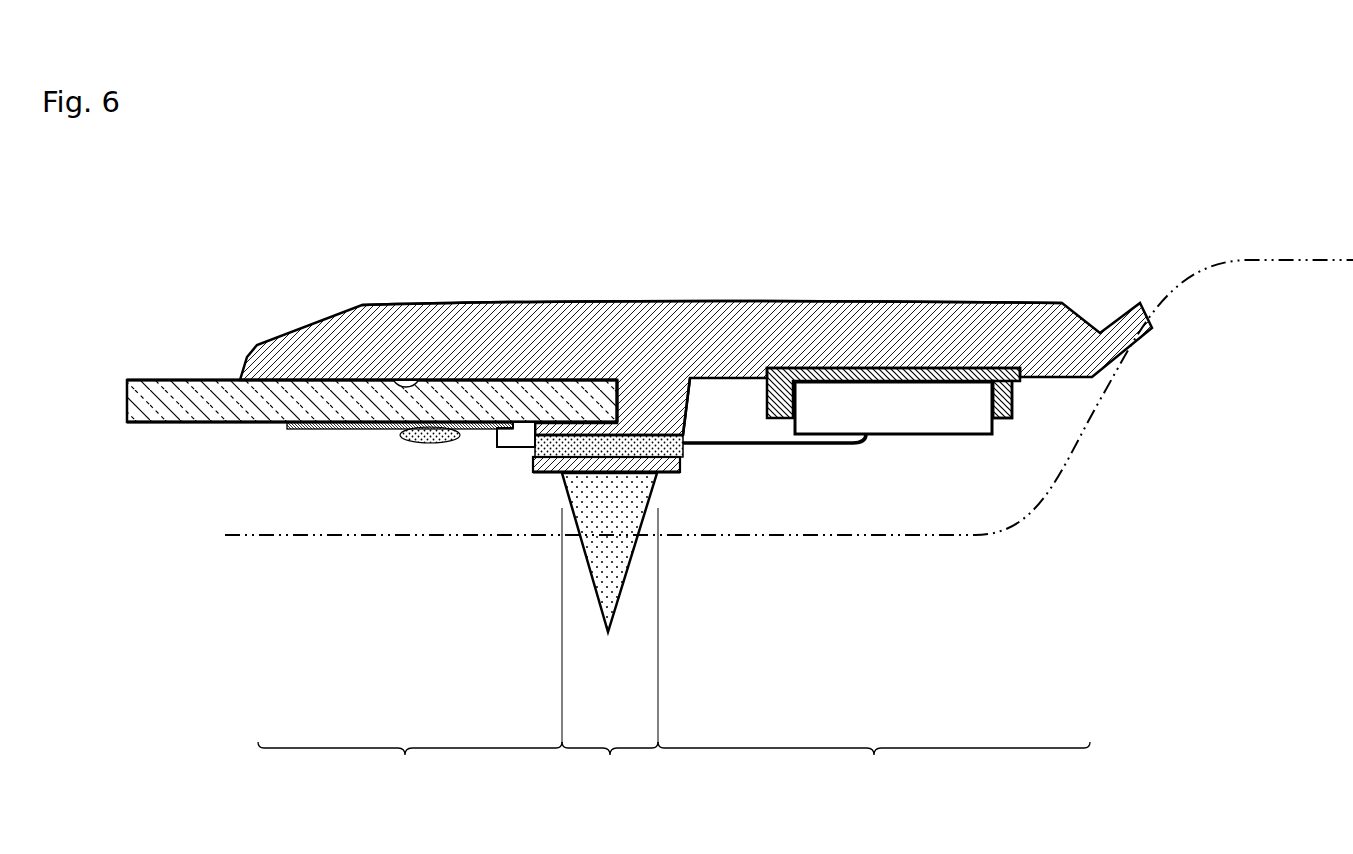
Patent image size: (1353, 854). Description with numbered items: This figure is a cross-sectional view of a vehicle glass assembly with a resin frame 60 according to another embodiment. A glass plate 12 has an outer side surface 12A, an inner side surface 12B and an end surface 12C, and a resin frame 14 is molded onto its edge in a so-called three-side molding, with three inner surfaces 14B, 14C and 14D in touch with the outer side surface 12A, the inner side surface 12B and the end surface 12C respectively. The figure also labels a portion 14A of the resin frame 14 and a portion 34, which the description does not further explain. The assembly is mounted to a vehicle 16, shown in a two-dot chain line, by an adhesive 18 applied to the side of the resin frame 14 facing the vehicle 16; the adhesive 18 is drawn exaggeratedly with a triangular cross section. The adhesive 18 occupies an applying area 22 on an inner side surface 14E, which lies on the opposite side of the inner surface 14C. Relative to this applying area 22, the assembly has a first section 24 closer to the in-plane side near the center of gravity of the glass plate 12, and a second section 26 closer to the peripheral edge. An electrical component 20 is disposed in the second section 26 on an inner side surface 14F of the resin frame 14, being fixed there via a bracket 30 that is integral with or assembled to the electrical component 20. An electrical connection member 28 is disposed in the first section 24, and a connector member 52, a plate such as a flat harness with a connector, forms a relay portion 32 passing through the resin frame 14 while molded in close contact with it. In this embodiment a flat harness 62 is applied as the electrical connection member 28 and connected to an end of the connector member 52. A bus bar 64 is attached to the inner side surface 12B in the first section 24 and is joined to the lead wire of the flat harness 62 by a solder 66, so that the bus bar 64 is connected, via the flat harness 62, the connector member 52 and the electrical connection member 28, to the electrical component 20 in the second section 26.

The glass plate 12 is at (152, 378).
The outer side surface 12A is at (193, 380).
The inner side surface 12B is at (128, 423).
The end surface 12C is at (620, 395).
The resin frame 14 is at (950, 300).
The top surface of housing body 14A is at (791, 300).
The inner surface 14B is at (400, 386).
The inner surface 14C is at (553, 422).
The inner surface 14D is at (590, 386).
The inner side surface 14E is at (668, 472).
The inner side surface 14F is at (930, 382).
The vehicle 16 is at (1297, 260).
The adhesive 18 is at (605, 583).
The electrical component 20 is at (898, 425).
The applying area 22 is at (610, 765).
The first section 24 is at (410, 765).
The second section 26 is at (874, 765).
The electrical connection member 28 is at (813, 452).
The bracket 30 is at (1012, 398).
The relay portion 32 is at (603, 468).
The connecting portion 34 is at (650, 440).
The connector member 52 is at (680, 440).
The glass assembly with a resin frame 60 is at (870, 195).
The flat harness 62 is at (505, 448).
The bus bar 64 is at (305, 430).
The solder 66 is at (430, 442).